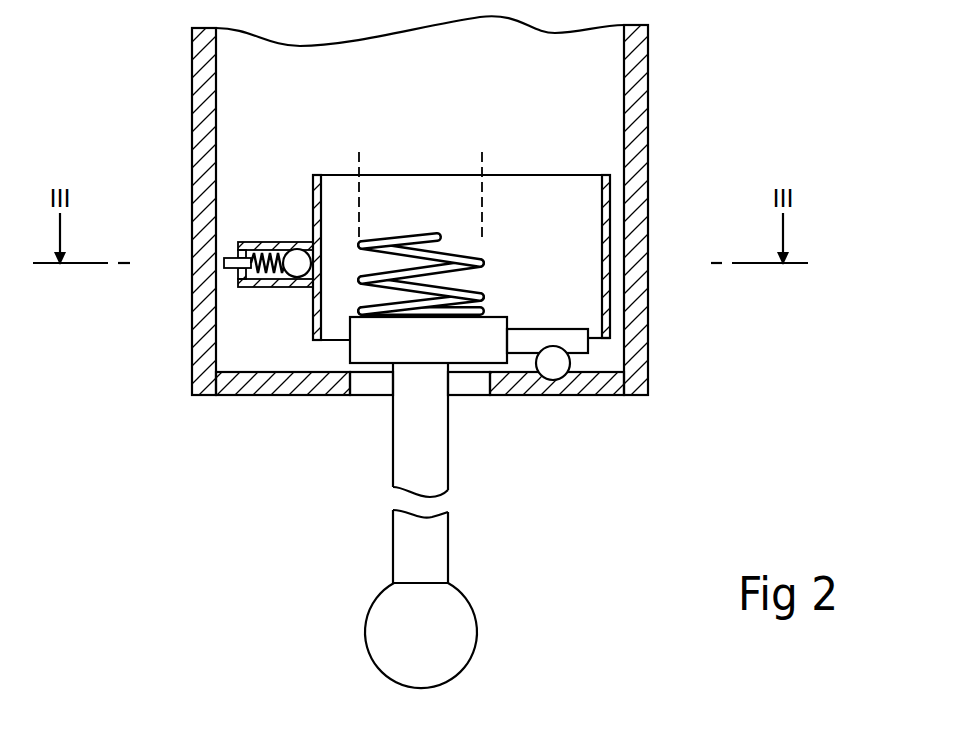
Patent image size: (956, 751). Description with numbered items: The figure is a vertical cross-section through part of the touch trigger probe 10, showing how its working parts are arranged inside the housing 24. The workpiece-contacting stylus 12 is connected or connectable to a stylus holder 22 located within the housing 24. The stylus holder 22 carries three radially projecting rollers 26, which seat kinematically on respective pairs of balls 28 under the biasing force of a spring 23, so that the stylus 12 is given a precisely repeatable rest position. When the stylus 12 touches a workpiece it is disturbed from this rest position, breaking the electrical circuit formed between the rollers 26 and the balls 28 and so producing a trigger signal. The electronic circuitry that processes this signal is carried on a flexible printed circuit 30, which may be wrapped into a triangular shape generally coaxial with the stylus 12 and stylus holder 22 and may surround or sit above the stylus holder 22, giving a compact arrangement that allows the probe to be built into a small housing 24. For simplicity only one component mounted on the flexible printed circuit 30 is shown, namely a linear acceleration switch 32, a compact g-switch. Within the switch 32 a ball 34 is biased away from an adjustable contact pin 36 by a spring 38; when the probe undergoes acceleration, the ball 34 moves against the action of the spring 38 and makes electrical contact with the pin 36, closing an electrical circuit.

The touch trigger probe 10 is at (234, 452).
The workpiece-contacting stylus 12 is at (449, 548).
The stylus holder 22 is at (468, 353).
The spring 23 is at (413, 232).
The housing 24 is at (648, 91).
The radially projecting rollers 26 is at (560, 330).
The balls 28 is at (560, 364).
The flexible printed circuit 30 is at (545, 175).
The linear acceleration switch 32 is at (254, 291).
The ball 34 is at (297, 249).
The adjustable contact pin 36 is at (231, 257).
The spring 38 is at (259, 243).